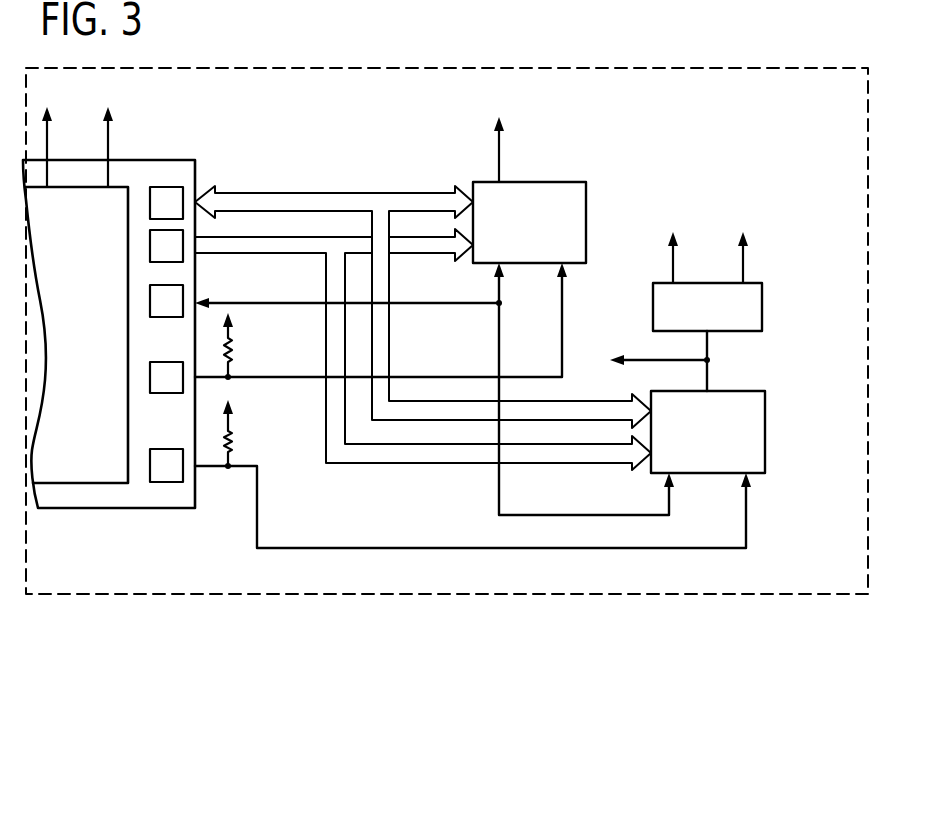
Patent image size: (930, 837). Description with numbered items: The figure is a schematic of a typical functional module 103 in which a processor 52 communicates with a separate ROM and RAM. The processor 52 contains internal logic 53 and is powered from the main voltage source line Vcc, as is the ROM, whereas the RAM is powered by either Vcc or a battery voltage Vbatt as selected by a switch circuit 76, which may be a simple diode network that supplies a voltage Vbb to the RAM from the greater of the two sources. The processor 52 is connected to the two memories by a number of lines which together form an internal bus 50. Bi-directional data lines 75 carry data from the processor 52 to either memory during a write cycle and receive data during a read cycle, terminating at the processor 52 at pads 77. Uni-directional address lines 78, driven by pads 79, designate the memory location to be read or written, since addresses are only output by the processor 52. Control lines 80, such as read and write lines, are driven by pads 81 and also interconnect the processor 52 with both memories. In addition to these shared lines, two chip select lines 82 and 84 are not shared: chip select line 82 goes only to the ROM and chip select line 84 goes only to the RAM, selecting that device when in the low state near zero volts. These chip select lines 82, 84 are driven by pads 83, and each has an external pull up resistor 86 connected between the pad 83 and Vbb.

The module 103 is at (750, 54).
The internal bus 50 is at (403, 145).
The processor 52 is at (152, 160).
The internal logic 53 is at (90, 483).
The pads 77 is at (150, 203).
The pads 79 is at (150, 245).
The pads 81 is at (150, 298).
The pads 83 is at (150, 378).
The data lines 75 is at (287, 190).
The address lines 78 is at (218, 255).
The control lines 80 is at (405, 304).
The chip select line 82 is at (283, 378).
The chip select line 84 is at (350, 548).
The pull up resistor 86 is at (232, 352).
The switch circuit 76 is at (752, 283).